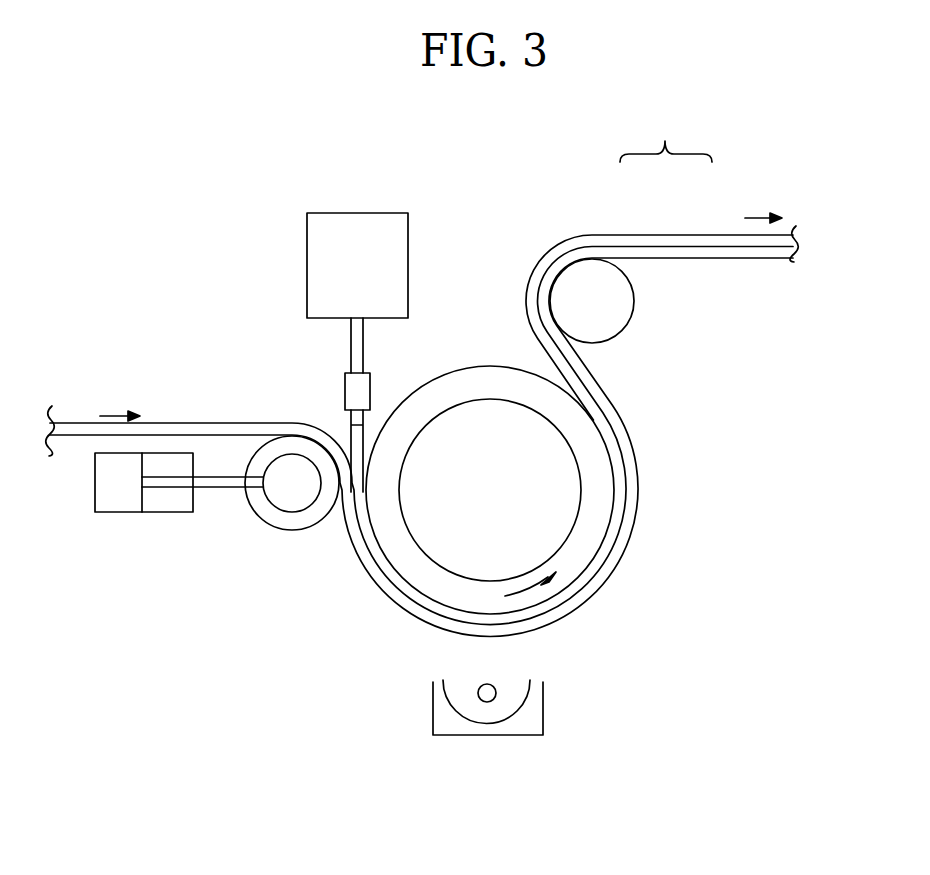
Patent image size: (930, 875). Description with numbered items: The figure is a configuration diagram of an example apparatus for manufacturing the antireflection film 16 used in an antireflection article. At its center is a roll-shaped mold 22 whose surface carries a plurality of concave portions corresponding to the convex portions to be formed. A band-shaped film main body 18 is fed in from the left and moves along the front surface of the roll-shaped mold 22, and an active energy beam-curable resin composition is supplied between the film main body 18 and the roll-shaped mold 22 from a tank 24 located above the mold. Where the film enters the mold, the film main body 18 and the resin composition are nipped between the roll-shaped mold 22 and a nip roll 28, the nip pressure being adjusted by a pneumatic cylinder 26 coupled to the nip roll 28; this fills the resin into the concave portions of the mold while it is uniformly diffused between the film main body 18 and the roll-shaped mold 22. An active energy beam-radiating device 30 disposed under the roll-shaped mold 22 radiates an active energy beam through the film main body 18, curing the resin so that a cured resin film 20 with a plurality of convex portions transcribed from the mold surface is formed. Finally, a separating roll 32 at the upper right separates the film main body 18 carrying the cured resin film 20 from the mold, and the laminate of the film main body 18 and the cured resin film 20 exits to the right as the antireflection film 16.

The antireflection film 16 is at (666, 133).
The film main body 18 is at (203, 421).
The cured resin film 20 is at (644, 242).
The roll-shaped mold 22 is at (484, 366).
The tank 24 is at (307, 262).
The pneumatic cylinder 26 is at (158, 513).
The nip roll 28 is at (287, 531).
The active energy beam-radiating device 30 is at (545, 701).
The separating roll 32 is at (634, 302).